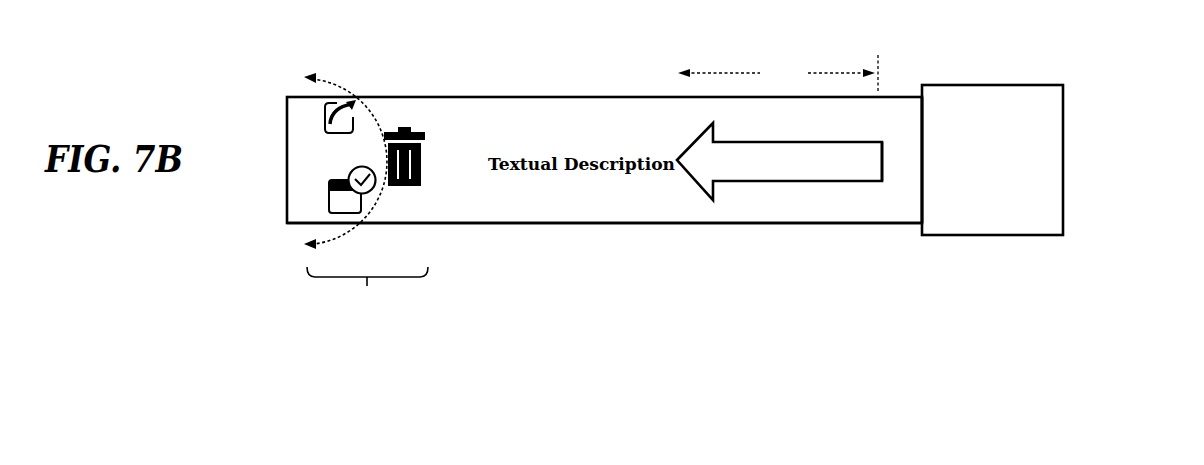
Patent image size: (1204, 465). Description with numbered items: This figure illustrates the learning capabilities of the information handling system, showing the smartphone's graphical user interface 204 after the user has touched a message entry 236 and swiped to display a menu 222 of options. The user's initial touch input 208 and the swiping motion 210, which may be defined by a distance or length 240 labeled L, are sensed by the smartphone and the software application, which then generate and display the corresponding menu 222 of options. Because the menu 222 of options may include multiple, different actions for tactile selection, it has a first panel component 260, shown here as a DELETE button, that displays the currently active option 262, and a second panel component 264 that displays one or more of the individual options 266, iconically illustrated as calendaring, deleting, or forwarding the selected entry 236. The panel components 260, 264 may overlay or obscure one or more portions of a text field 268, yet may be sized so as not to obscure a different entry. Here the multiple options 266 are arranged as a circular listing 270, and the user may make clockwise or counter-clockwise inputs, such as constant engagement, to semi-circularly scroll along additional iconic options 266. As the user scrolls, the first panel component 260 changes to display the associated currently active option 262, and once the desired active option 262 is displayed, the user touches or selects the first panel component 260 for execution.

The graphical user interface 204 is at (790, 362).
The initial touch input 208 is at (860, 165).
The swiping motion 210 is at (797, 171).
The menu of options 222 is at (352, 94).
The message entry 236 is at (593, 225).
The length 240 is at (785, 57).
The first panel component 260 is at (1063, 157).
The currently active option 262 is at (1133, 90).
The second panel component 264 is at (298, 198).
The individual options 266 is at (212, 218).
The text field 268 is at (517, 115).
The circular listing 270 is at (367, 295).